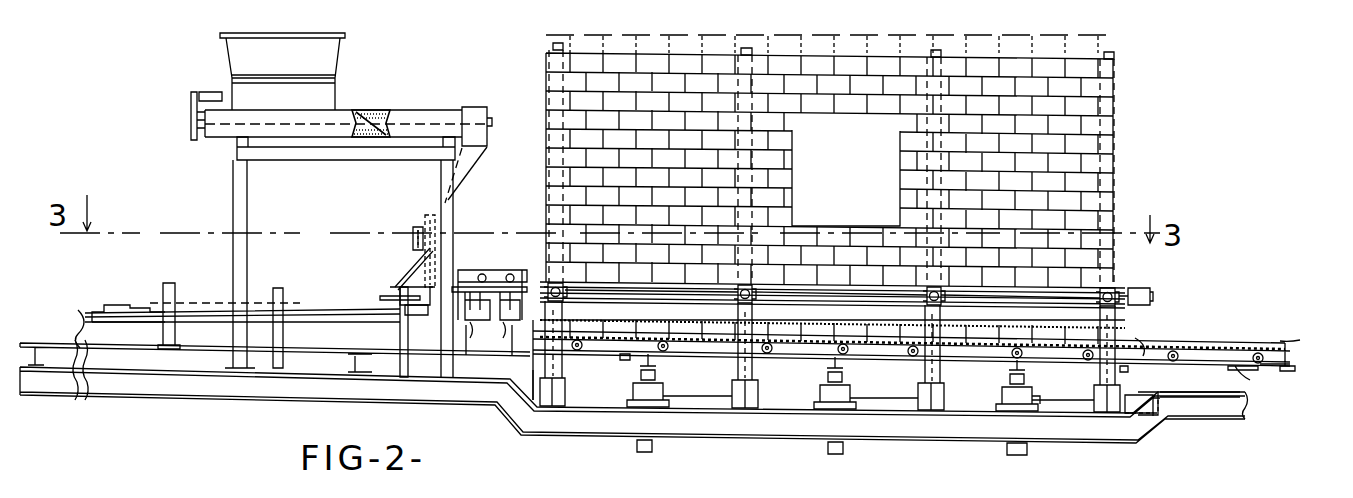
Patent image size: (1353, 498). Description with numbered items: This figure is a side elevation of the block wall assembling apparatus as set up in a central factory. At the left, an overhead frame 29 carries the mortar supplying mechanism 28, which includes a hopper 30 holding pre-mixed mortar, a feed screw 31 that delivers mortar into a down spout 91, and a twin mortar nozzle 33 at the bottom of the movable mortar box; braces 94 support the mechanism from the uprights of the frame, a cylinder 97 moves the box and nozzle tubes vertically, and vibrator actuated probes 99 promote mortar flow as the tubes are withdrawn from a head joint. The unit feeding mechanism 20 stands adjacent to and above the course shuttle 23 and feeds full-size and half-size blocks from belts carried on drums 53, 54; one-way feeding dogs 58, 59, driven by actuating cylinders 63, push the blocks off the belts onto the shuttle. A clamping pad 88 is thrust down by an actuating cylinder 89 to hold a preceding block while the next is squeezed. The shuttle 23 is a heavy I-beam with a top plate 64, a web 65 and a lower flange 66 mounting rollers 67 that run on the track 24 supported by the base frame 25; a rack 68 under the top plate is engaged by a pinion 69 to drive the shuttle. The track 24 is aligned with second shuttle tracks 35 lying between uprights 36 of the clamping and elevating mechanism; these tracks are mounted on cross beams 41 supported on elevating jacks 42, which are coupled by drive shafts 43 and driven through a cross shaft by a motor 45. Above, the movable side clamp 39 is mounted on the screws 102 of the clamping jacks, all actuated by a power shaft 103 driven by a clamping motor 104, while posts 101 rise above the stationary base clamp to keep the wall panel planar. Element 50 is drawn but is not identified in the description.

The unit feeding mechanism 20 is at (524, 251).
The individual course shuttle 23 is at (120, 333).
The track 24 is at (61, 325).
The base frame 25 is at (474, 409).
The mortar supplying mechanism 28 is at (480, 99).
The overhead frame 29 is at (221, 185).
The hopper 30 is at (338, 50).
The screw 31 is at (370, 110).
The twin mortar nozzle 33 is at (380, 298).
The shuttle tracks 35 is at (1136, 337).
The uprights 36 is at (575, 372).
The side clamp 39 is at (800, 300).
The cross beams 41 is at (656, 372).
The elevating jacks 42 is at (636, 386).
The drive shafts 43 is at (702, 400).
The motor 45 is at (1145, 390).
The platform 50 is at (153, 310).
The drums 53 is at (466, 350).
The drums 54 is at (501, 336).
The one-way feeding dog 58 is at (466, 336).
The one-way feeding dog 59 is at (501, 350).
The actuating cylinders 63 is at (510, 270).
The top plate 64 is at (1301, 338).
The web 65 is at (1292, 358).
The lower flange 66 is at (1251, 378).
The rollers 67 is at (848, 355).
The rack 68 is at (626, 360).
The pinion 69 is at (512, 385).
The pad 88 is at (402, 300).
The actuating cylinder 89 is at (399, 282).
The down spout 91 is at (470, 160).
The braces 94 is at (408, 264).
The cylinder 97 is at (412, 240).
The vibrator actuated probes 99 is at (436, 262).
The posts 101 is at (565, 47).
The screws 102 is at (566, 288).
The power shaft 103 is at (685, 302).
The clamping motor 104 is at (1147, 287).